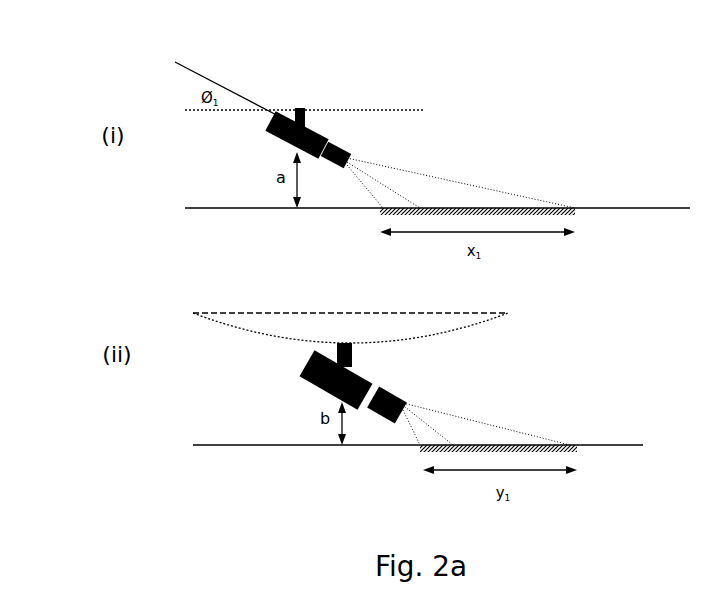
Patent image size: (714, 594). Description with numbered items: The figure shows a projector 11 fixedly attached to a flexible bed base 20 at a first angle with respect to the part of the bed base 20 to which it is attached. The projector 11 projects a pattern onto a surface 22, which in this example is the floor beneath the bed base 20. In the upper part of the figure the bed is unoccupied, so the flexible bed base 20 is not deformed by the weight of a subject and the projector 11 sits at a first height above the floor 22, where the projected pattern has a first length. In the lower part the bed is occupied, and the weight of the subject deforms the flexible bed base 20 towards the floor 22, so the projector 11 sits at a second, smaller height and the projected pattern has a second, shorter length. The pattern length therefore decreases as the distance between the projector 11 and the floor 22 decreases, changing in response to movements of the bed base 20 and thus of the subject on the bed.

The flexible bed base 20 is at (343, 108).
The projector 11 is at (313, 137).
The surface 22 is at (645, 207).